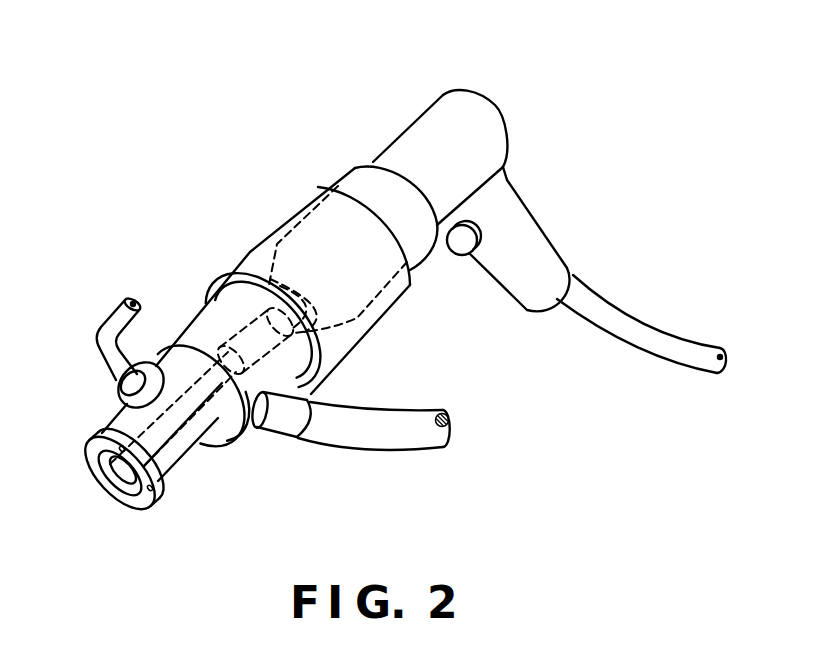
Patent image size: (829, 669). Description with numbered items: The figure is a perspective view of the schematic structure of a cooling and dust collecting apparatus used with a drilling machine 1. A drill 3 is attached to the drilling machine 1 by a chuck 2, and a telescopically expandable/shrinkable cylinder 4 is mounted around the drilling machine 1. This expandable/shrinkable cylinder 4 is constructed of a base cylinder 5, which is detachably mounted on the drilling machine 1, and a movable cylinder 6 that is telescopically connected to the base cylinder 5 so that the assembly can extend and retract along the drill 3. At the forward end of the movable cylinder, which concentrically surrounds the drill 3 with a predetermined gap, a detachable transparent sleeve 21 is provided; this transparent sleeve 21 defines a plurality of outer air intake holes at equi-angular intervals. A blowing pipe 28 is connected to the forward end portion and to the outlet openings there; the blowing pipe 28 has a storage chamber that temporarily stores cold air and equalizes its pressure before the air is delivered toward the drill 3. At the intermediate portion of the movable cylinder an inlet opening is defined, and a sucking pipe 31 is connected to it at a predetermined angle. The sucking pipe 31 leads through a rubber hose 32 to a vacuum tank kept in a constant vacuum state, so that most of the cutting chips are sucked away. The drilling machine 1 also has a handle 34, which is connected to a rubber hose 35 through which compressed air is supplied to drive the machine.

The drilling machine 1 is at (350, 156).
The chuck 2 is at (290, 363).
The drill 3 is at (178, 452).
The telescopically expandable/shrinkable cylinder 4 is at (233, 256).
The base cylinder 5 is at (297, 213).
The movable cylinder 6 is at (197, 317).
The transparent sleeve 21 is at (86, 434).
The blowing pipe 28 is at (95, 310).
The sucking pipe 31 is at (286, 421).
The rubber hose 32 is at (373, 463).
The handle 34 is at (554, 234).
The rubber hose 35 is at (643, 337).